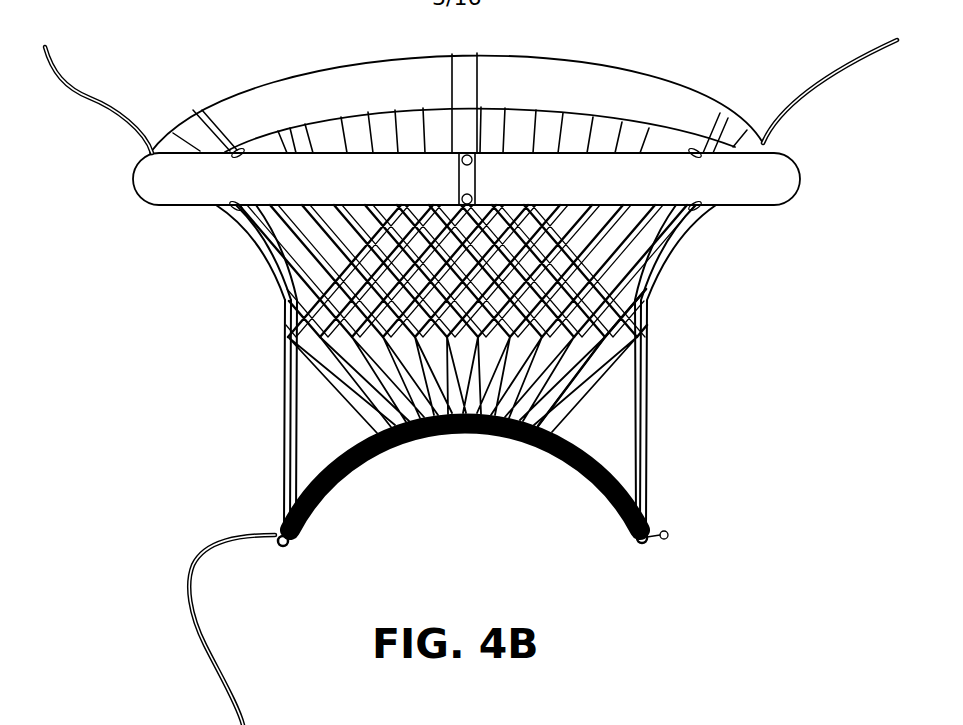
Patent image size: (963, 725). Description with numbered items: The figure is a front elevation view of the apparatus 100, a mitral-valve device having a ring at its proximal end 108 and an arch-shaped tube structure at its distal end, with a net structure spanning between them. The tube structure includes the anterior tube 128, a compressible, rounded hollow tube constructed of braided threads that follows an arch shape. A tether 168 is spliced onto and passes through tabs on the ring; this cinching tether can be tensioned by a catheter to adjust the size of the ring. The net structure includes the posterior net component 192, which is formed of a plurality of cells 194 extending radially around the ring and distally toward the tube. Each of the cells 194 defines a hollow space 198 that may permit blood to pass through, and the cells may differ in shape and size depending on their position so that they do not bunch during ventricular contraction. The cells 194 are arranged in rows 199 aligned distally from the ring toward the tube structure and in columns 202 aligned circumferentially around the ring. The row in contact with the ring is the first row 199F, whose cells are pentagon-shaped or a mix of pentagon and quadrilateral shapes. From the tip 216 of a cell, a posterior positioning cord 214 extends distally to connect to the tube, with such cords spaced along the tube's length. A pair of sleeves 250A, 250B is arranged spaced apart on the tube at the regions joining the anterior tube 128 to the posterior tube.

The apparatus 100 is at (194, 53).
The proximal end 108 is at (440, 55).
The anterior tube 128 is at (455, 435).
The tether 168 is at (112, 108).
The posterior net component 192 is at (300, 352).
The cells 194 is at (298, 277).
The hollow space 198 is at (610, 281).
The rows 199 is at (612, 326).
The first row 199F is at (295, 132).
The columns 202 is at (570, 128).
The posterior positioning cord 214 is at (345, 378).
The tip 216 is at (537, 332).
The first sleeve 250A is at (660, 550).
The second sleeve 250B is at (300, 549).